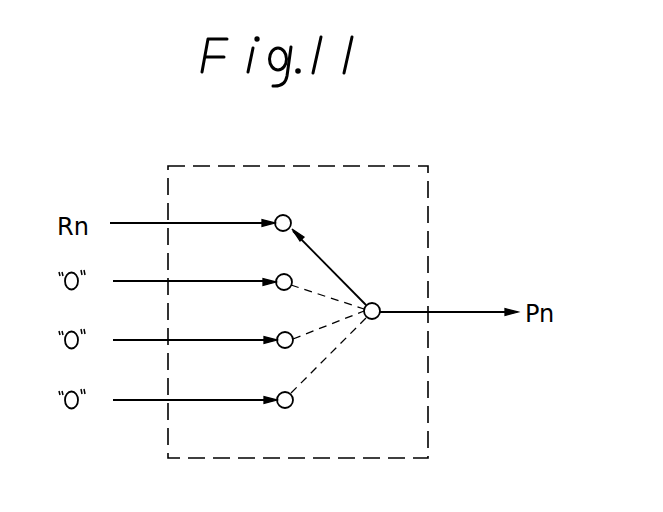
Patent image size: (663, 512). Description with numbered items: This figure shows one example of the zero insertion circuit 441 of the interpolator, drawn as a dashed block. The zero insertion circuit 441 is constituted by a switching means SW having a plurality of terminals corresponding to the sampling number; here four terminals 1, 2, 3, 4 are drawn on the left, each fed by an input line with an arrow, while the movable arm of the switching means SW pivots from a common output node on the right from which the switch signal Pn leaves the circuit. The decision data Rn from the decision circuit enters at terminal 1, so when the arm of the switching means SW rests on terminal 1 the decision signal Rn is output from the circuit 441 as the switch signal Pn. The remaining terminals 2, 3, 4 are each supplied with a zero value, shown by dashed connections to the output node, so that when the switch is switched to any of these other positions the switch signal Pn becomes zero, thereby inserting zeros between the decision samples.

The zero insertion circuit 441 is at (396, 166).
The switching means SW is at (339, 252).
The terminal 1 is at (302, 188).
The terminal 2 is at (278, 289).
The terminal 3 is at (280, 348).
The terminal 4 is at (280, 408).